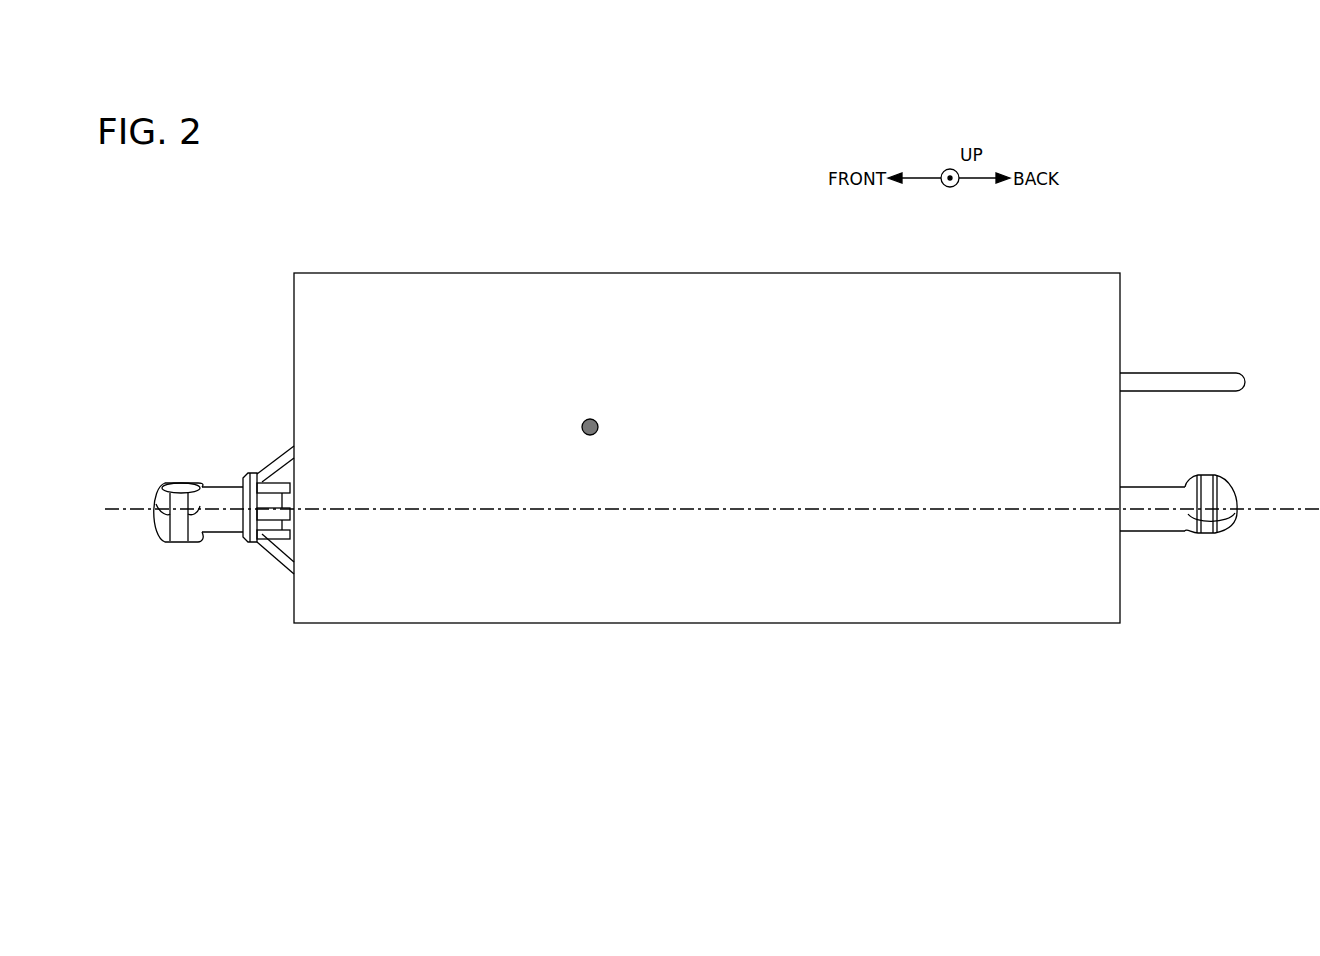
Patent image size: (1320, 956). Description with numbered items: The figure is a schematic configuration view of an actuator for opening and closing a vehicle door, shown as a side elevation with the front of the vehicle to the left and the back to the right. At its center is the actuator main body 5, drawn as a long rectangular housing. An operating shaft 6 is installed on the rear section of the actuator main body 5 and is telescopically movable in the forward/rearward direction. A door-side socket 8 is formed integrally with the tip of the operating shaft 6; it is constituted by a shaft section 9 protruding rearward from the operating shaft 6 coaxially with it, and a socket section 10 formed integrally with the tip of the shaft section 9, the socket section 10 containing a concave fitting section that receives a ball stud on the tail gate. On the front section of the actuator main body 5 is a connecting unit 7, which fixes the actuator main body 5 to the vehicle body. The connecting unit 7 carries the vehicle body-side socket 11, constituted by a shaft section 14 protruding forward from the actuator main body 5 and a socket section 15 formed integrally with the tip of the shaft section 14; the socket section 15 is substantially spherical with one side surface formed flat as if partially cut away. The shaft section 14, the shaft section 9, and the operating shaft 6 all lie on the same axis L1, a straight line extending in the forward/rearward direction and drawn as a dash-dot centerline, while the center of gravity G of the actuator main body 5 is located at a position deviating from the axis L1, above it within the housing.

The actuator main body 5 is at (527, 272).
The operating shaft 6 is at (1150, 487).
The connecting unit 7 is at (214, 464).
The door-side socket 8 is at (1183, 588).
The shaft section 9 is at (1150, 536).
The socket section 10 is at (1207, 536).
The vehicle body-side socket 11 is at (189, 592).
The shaft section 14 is at (222, 540).
The socket section 15 is at (178, 548).
The center of gravity G is at (590, 435).
The axis L1 is at (1262, 492).